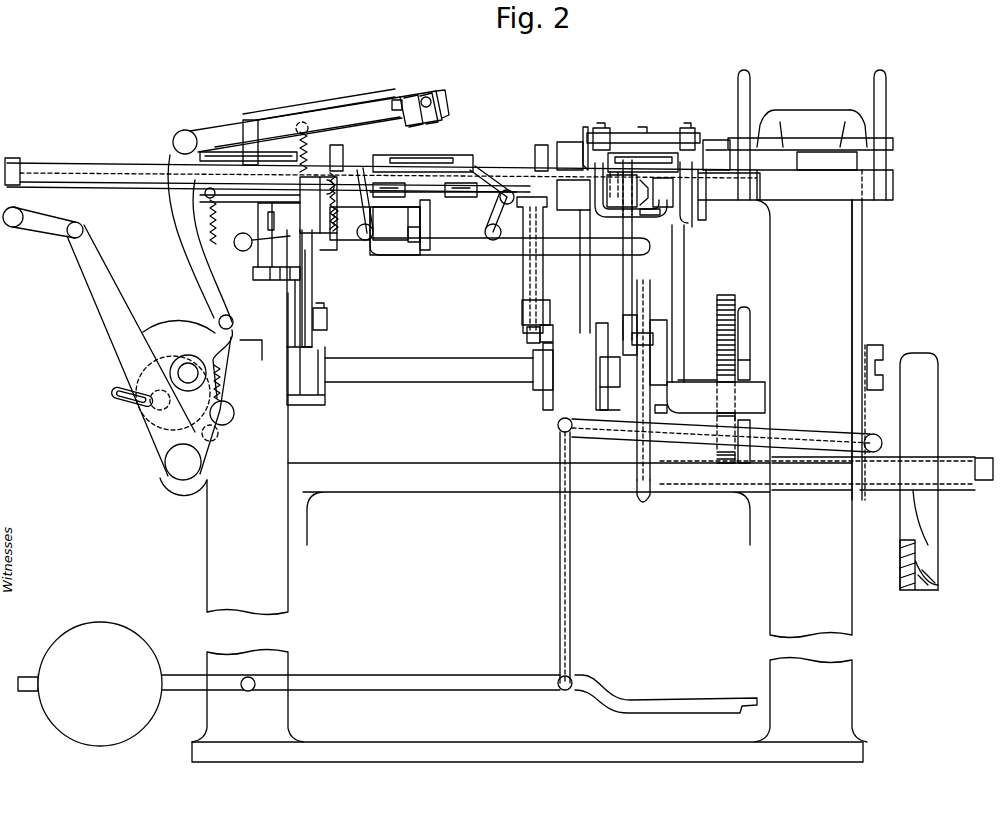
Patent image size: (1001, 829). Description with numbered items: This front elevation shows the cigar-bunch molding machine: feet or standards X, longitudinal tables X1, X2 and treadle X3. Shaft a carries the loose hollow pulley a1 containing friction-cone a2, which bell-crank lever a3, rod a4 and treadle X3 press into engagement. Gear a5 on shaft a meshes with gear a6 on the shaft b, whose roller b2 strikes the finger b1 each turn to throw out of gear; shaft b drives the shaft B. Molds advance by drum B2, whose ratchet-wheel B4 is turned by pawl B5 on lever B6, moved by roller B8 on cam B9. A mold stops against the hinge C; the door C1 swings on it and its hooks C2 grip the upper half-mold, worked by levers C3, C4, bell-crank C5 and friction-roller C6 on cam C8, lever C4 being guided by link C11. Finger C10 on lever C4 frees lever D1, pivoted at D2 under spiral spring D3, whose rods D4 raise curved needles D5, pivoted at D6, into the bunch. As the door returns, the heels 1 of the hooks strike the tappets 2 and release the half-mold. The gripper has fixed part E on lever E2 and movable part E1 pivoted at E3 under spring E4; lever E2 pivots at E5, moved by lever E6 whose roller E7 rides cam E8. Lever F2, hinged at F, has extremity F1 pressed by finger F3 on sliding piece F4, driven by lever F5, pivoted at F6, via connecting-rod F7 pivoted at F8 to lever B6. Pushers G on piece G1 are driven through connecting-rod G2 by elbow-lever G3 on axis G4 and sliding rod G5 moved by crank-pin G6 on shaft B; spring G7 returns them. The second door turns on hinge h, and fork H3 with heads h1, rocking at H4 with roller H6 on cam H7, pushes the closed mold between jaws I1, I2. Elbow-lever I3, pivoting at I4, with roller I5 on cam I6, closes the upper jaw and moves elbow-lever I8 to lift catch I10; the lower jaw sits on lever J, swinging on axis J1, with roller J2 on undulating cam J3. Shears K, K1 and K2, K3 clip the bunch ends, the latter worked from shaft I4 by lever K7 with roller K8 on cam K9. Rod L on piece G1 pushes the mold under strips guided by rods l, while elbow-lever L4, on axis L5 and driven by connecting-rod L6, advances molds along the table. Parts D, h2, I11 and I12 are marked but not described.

The feet or standards X is at (529, 481).
The longitudinal table X1 is at (825, 185).
The longitudinal table X2 is at (200, 197).
The treadle X3 is at (666, 694).
The rods l is at (744, 95).
The rod L is at (120, 190).
The elbow-lever L4 is at (827, 161).
The axis L5 is at (835, 478).
The connecting-rod L6 is at (878, 355).
The rammers or pushers G is at (72, 163).
The piece G1 is at (13, 209).
The connecting-rod G2 is at (48, 221).
The elbow-lever G3 is at (149, 350).
The axis G4 is at (183, 470).
The sliding rod G5 is at (126, 404).
The crank-pin G6 is at (173, 393).
The spiral spring G7 is at (220, 402).
The shaft B is at (195, 378).
The drum B2 is at (388, 258).
The ratchet-wheel B4 is at (338, 245).
The pawl B5 is at (335, 183).
The lever B6 is at (312, 295).
The roller B8 is at (328, 320).
The cam B9 is at (320, 406).
The shaft b is at (429, 370).
The cam or finger b1 is at (750, 373).
The roller b2 is at (750, 343).
The part of gripper E is at (430, 105).
The movable part of gripper E1 is at (408, 120).
The lever E2 is at (307, 131).
The pivot E3 is at (446, 100).
The spring E4 is at (428, 120).
The pivot E5 is at (173, 142).
The lever E6 is at (192, 250).
The friction-roller E7 is at (234, 326).
The cam E8 is at (187, 359).
The hinge F is at (318, 105).
The extremity F1 is at (285, 112).
The lever F2 is at (394, 100).
The finger F3 is at (248, 120).
The piece F4 is at (225, 152).
The lever F5 is at (219, 194).
The pivot F6 is at (268, 220).
The connecting-rod F7 is at (280, 283).
The pivot F8 is at (293, 272).
The slide D is at (413, 245).
The lever D1 is at (400, 243).
The pivot D2 is at (252, 237).
The spiral spring D3 is at (330, 246).
The rods D4 is at (440, 240).
The curved needles D5 is at (327, 193).
The pivots D6 is at (425, 204).
The hinge C is at (433, 157).
The door C1 is at (462, 156).
The hooks C2 is at (495, 162).
The lever C3 is at (437, 215).
The lever C4 is at (502, 256).
The bell-crank C5 is at (527, 335).
The friction-roller C6 is at (553, 333).
The cam C8 is at (545, 402).
The finger C10 is at (418, 243).
The link C11 is at (543, 228).
The shear blade K is at (708, 140).
The shear blade K1 is at (586, 127).
The shear blade K2 is at (708, 188).
The shear blade K3 is at (573, 195).
The lever K7 is at (590, 300).
The friction-roller K8 is at (555, 362).
The cam K9 is at (598, 390).
The upper jaw I1 is at (643, 127).
The lower jaw I2 is at (753, 155).
The elbow-lever I3 is at (606, 277).
The pivot shaft I4 is at (565, 142).
The friction-roller I5 is at (611, 372).
The cam I6 is at (610, 402).
The elbow-lever I8 is at (627, 191).
The movable catch I10 is at (660, 217).
The block I11 is at (605, 130).
The block I12 is at (688, 128).
The hinge h is at (660, 153).
The head h1 is at (690, 218).
The rods h2 is at (605, 222).
The fork H3 is at (680, 298).
The rocking axis H4 is at (716, 397).
The friction-roller H6 is at (668, 409).
The cam H7 is at (658, 352).
The lever J is at (634, 295).
The friction-roller J2 is at (642, 380).
The cam J3 is at (640, 318).
The axis J1 is at (645, 480).
The shaft a is at (826, 473).
The pulley a1 is at (919, 471).
The friction-cone a2 is at (903, 562).
The bell-crank lever a3 is at (720, 435).
The rod a4 is at (570, 557).
The gear a5 is at (705, 456).
The gear a6 is at (726, 379).
The heels 1 is at (422, 192).
The tappets 2 is at (428, 209).